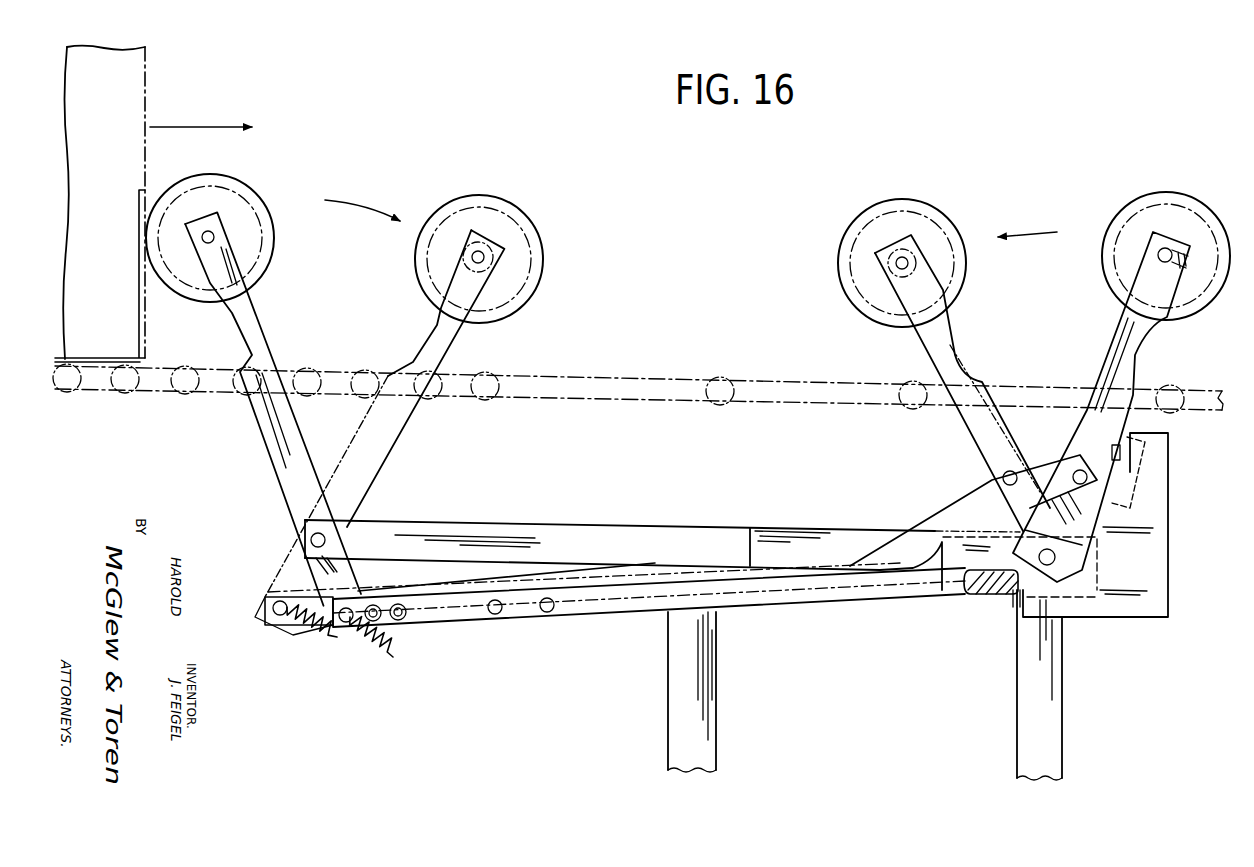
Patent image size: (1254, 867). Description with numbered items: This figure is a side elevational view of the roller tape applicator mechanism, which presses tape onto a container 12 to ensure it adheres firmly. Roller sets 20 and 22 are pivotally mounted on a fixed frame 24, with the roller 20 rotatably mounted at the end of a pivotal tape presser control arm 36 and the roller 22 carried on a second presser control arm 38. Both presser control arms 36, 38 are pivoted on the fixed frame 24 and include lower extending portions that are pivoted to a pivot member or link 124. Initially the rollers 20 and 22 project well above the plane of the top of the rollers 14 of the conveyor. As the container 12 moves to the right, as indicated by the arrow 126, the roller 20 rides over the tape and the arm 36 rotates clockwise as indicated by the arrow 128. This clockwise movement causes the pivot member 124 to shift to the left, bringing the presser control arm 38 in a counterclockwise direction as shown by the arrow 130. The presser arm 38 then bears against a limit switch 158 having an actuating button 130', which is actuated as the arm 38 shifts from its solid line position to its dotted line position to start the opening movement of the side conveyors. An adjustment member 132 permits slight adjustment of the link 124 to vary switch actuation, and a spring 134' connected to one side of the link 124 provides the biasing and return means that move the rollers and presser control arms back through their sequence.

The container 12 is at (148, 76).
The arrow 126 is at (196, 127).
The rollers 14 is at (722, 388).
The roller 20 is at (247, 197).
The presser control arm 36 is at (253, 414).
The arrow 128 is at (357, 196).
The roller 22 is at (862, 219).
The arrow 130 is at (1027, 217).
The presser control arm 38 is at (1141, 333).
The fixed frame 24 is at (662, 538).
The actuating button 130' is at (1039, 510).
The frame bracket 158 is at (1147, 450).
The pivot member 124 is at (428, 623).
The spring 134' is at (355, 651).
The adjustment member 132 is at (985, 597).